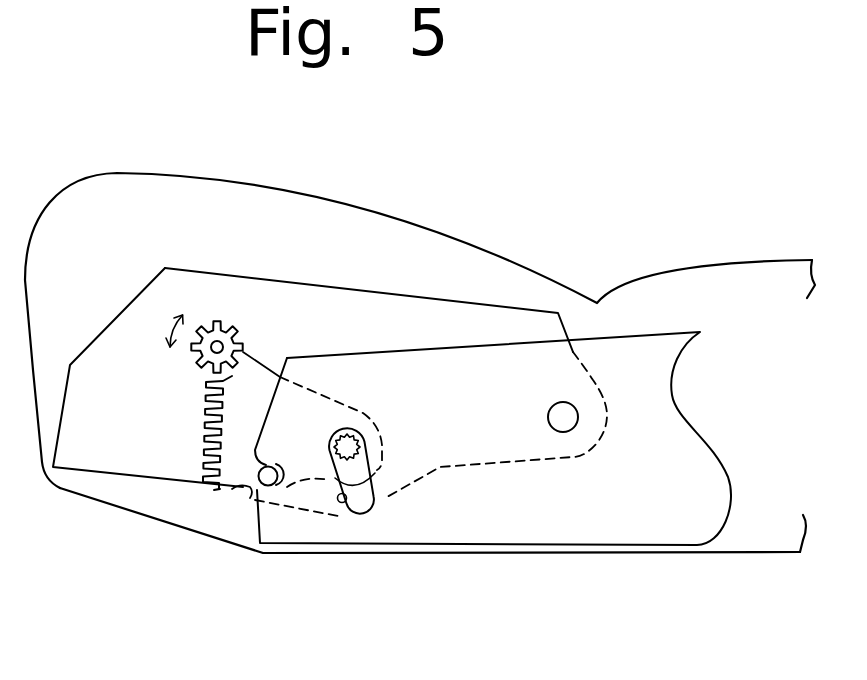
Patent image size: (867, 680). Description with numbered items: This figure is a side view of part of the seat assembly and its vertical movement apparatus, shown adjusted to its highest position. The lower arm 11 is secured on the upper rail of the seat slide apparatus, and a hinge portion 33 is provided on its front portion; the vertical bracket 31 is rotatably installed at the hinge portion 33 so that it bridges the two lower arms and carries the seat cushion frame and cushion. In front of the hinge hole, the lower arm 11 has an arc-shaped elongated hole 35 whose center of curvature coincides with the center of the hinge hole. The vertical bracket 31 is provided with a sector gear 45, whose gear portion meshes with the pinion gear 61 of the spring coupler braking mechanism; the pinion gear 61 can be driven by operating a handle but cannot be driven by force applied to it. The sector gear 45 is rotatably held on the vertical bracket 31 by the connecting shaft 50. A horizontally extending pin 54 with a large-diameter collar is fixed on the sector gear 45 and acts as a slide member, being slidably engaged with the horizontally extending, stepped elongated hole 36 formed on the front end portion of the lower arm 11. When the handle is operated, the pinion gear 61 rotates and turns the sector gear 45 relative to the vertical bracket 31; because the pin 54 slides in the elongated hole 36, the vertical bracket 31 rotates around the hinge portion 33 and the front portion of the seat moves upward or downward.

The lower arm 11 is at (537, 515).
The vertical bracket 31 is at (265, 298).
The hinge portion 33 is at (558, 402).
The elongated hole 35 is at (342, 502).
The elongated hole 36 is at (243, 488).
The sector gear 45 is at (258, 386).
The connecting shaft 50 is at (346, 458).
The pin 54 is at (270, 478).
The pinion gear 61 is at (231, 325).